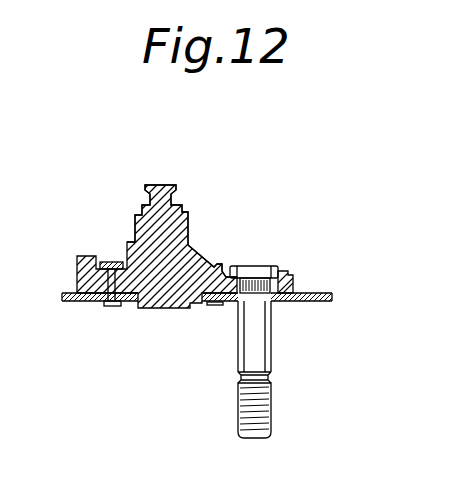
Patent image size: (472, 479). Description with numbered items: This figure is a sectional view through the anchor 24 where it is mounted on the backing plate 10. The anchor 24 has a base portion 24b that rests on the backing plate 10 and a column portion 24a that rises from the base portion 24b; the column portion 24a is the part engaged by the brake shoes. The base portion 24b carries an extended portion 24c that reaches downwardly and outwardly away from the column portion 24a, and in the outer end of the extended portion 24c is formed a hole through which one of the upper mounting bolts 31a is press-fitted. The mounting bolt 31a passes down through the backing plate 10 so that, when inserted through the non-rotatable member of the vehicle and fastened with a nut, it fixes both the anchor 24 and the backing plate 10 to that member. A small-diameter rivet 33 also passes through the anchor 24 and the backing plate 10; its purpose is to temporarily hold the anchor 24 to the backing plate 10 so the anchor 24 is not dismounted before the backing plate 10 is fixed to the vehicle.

The backing plate 10 is at (317, 303).
The anchor 24 is at (216, 231).
The column portion 24a is at (192, 222).
The base portion 24b is at (226, 249).
The extended portions 24c is at (293, 288).
The rivets 33 is at (113, 306).
The upper mounting bolts 31a is at (272, 357).